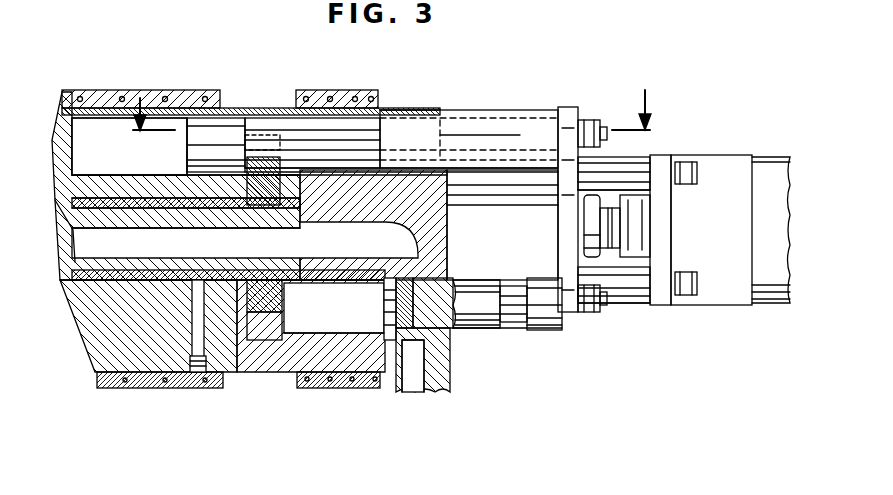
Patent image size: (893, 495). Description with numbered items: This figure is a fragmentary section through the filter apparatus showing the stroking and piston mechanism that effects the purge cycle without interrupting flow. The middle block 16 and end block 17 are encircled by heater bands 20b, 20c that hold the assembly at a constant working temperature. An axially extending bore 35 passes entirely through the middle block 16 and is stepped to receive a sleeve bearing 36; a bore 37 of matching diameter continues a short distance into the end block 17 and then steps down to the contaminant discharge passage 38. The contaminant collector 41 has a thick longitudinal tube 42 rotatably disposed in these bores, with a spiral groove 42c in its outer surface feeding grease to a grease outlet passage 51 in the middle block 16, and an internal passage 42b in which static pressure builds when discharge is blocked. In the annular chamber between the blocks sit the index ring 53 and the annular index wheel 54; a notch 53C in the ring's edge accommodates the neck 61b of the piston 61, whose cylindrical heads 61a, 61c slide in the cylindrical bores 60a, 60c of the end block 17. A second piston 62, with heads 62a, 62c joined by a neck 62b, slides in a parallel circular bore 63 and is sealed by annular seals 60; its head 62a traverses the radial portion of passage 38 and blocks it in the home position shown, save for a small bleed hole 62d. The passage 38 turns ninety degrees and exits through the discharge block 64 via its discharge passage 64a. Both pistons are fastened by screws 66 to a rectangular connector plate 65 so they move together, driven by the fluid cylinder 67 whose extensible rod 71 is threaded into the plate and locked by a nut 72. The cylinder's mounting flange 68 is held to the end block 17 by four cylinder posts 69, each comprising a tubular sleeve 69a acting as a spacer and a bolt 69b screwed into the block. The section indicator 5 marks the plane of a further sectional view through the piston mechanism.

The middle block 16 is at (95, 352).
The end block 17 is at (435, 108).
The heater band 20b is at (145, 90).
The heater band 20c is at (328, 90).
The axially extending bore 35 is at (92, 204).
The sleeve bearing 36 is at (125, 206).
The bore 37 is at (283, 206).
The contaminant discharge passage 38 is at (372, 224).
The contaminant collector 41 is at (73, 263).
The longitudinal tube 42 is at (88, 270).
The passage 42b is at (150, 218).
The spiral groove 42c is at (185, 208).
The grease outlet passage 51 is at (192, 318).
The index ring 53 is at (268, 335).
The notch 53C is at (258, 160).
The annular index wheel 54 is at (250, 306).
The annular seals 60 is at (388, 262).
The cylindrical bore 60a is at (97, 128).
The cylindrical bore 60c is at (345, 120).
The piston 61 is at (520, 107).
The cylindrical head 61a is at (220, 122).
The neck 61b is at (360, 135).
The cylindrical head 61c is at (488, 112).
The second piston 62 is at (545, 330).
The cylindrical head 62a is at (482, 330).
The neck 62b is at (518, 324).
The cylindrical head 62c is at (557, 332).
The bleed hole 62d is at (386, 310).
The circular bore 63 is at (300, 335).
The discharge block 64 is at (393, 393).
The discharge passage 64a is at (415, 392).
The connector plate 65 is at (575, 110).
The screws 66 is at (598, 122).
The fluid cylinder 67 is at (718, 157).
The mounting flange 68 is at (664, 160).
The cylinder posts 69 is at (619, 177).
The tubular sleeve 69a is at (652, 186).
The bolt 69b is at (697, 173).
The extensible rod 71 is at (640, 232).
The nut 72 is at (590, 235).
The section line 5- 5 is at (393, 115).